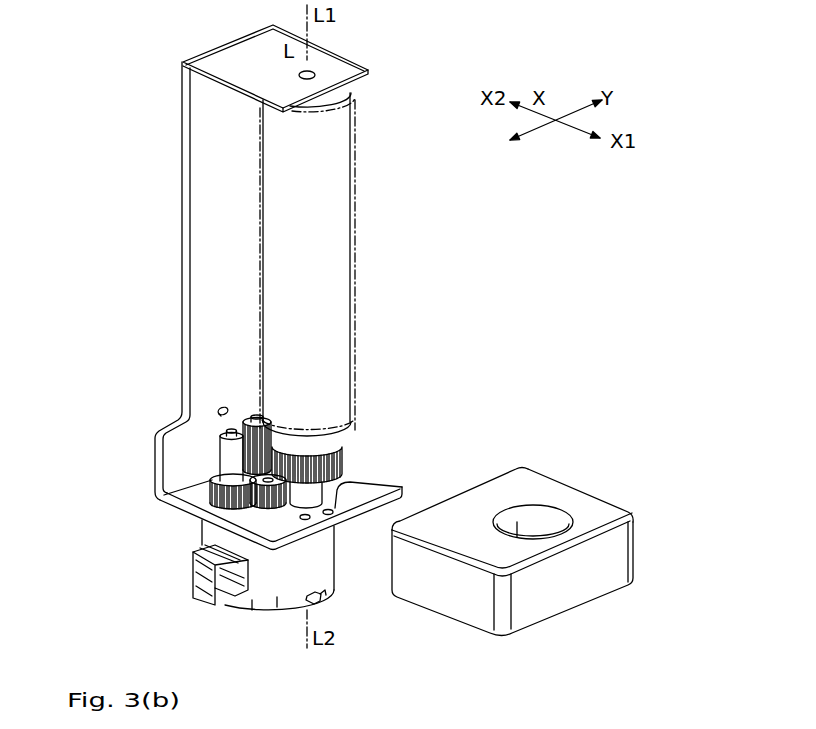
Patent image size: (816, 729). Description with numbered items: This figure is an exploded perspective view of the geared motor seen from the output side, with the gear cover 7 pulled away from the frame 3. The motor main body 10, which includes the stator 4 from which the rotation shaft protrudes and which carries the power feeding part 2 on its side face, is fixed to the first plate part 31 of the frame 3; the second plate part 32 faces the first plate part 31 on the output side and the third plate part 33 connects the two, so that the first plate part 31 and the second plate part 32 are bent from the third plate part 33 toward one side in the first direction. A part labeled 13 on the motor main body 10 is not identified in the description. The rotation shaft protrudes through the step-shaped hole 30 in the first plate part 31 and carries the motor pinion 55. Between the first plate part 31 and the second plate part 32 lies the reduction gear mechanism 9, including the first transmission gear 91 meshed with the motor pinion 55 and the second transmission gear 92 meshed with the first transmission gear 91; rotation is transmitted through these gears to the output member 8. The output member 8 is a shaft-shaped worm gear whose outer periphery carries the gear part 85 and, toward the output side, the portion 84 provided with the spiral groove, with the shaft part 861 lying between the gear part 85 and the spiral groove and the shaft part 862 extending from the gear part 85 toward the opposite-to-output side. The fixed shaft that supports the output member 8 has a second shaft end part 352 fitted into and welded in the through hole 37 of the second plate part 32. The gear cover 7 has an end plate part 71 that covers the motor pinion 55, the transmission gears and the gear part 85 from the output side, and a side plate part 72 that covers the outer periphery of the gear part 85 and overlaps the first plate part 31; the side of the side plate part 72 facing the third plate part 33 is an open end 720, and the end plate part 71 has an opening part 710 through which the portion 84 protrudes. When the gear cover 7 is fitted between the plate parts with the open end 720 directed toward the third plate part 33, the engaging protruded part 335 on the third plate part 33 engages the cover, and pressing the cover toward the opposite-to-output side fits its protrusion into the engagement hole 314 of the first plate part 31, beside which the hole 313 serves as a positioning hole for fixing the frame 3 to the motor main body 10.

The power feeding part 2 is at (202, 600).
The frame 3 is at (178, 98).
The stator 4 is at (253, 602).
The gear cover 7 is at (546, 471).
The output member 8 is at (258, 262).
The reduction gear mechanism 9 is at (211, 425).
The motor main body 10 is at (337, 605).
The motor 13 is at (278, 597).
The step-shaped hole 30 is at (248, 503).
The first plate part 31 is at (190, 498).
The second plate part 32 is at (232, 48).
The third plate part 33 is at (202, 163).
The through hole 37 is at (313, 72).
The second shaft end part 352 is at (307, 75).
The motor pinion 55 is at (258, 493).
The end plate part 71 is at (551, 498).
The side plate part 72 is at (575, 587).
The portion provided with the spiral groove 84 is at (363, 403).
The gear part 85 is at (343, 457).
The first transmission gear 91 is at (227, 470).
The second transmission gear 92 is at (257, 417).
The hole 313 is at (306, 518).
The engagement hole 314 is at (342, 458).
The engaging protruded part 335 is at (218, 411).
The opening part 710 is at (568, 514).
The open end 720 is at (494, 476).
The shaft part 861 is at (348, 424).
The shaft part 862 is at (313, 492).